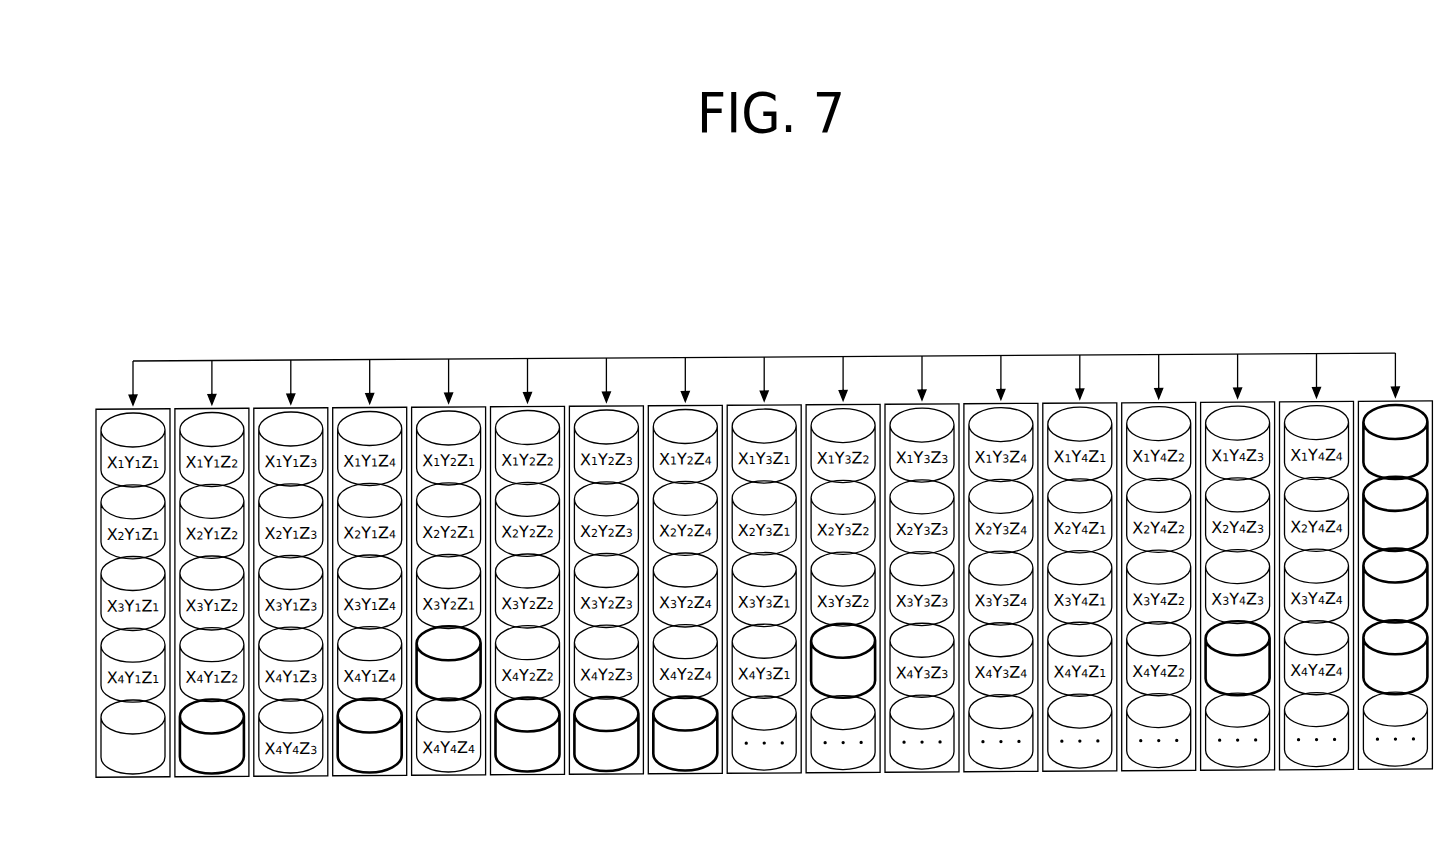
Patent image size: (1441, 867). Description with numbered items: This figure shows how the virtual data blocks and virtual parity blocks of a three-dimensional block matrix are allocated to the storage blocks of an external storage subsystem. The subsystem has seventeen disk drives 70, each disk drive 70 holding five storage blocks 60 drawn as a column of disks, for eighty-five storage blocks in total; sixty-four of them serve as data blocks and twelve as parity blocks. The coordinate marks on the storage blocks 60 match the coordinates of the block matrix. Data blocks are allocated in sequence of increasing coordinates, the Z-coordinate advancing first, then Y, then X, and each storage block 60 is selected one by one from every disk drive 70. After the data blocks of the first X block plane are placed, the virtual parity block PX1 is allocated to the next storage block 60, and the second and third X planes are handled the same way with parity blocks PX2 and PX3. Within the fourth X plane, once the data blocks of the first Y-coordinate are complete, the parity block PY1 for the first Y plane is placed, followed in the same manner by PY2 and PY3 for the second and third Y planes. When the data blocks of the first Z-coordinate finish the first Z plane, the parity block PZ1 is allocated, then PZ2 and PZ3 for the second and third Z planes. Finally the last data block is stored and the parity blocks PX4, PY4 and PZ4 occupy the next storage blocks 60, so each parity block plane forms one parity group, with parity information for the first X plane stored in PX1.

The storage block 60 is at (133, 779).
The disk drive 70 is at (136, 634).
The virtual parity block for block plane BX1 PX1 is at (1395, 442).
The virtual parity block for block plane BX2 PX2 is at (1395, 514).
The virtual parity block for block plane BX3 PX3 is at (1395, 585).
The virtual parity block for block plane BX4 PX4 is at (528, 734).
The virtual parity block for block plane BY1 PY1 is at (449, 663).
The virtual parity block for block plane BY2 PY2 is at (843, 661).
The virtual parity block for block plane BY3 PY3 is at (1238, 658).
The virtual parity block for block plane BY4 PY4 is at (606, 734).
The virtual parity block for block plane BZ1 PZ1 is at (1395, 657).
The virtual parity block for block plane BZ2 PZ2 is at (212, 736).
The virtual parity block for block plane BZ3 PZ3 is at (370, 735).
The virtual parity block for block plane BZ4 PZ4 is at (685, 733).